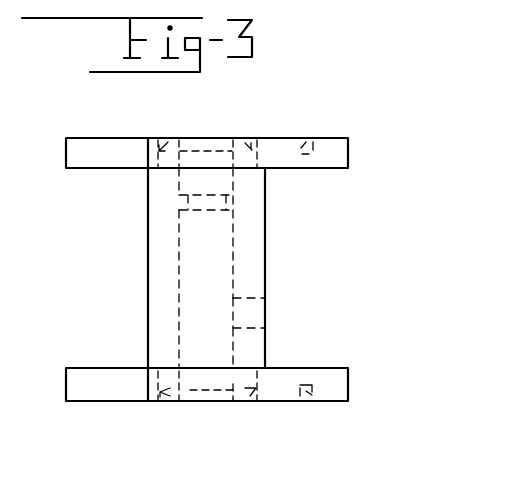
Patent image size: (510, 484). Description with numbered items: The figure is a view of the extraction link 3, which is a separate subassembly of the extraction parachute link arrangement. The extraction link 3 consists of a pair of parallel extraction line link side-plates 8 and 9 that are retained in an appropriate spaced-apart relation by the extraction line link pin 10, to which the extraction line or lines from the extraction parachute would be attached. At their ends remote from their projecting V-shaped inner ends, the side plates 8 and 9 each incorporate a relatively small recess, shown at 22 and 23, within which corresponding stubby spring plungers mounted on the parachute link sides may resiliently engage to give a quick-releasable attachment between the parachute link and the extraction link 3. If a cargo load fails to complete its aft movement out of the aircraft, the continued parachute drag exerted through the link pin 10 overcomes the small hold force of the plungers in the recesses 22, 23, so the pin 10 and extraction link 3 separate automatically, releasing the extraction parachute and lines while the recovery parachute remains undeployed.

The extraction link 3 is at (124, 236).
The extraction line link side-plate 8 is at (104, 148).
The extraction line link side-plate 9 is at (268, 402).
The extraction line link pin 10 is at (266, 260).
The recess 22 is at (310, 139).
The recess 23 is at (305, 402).